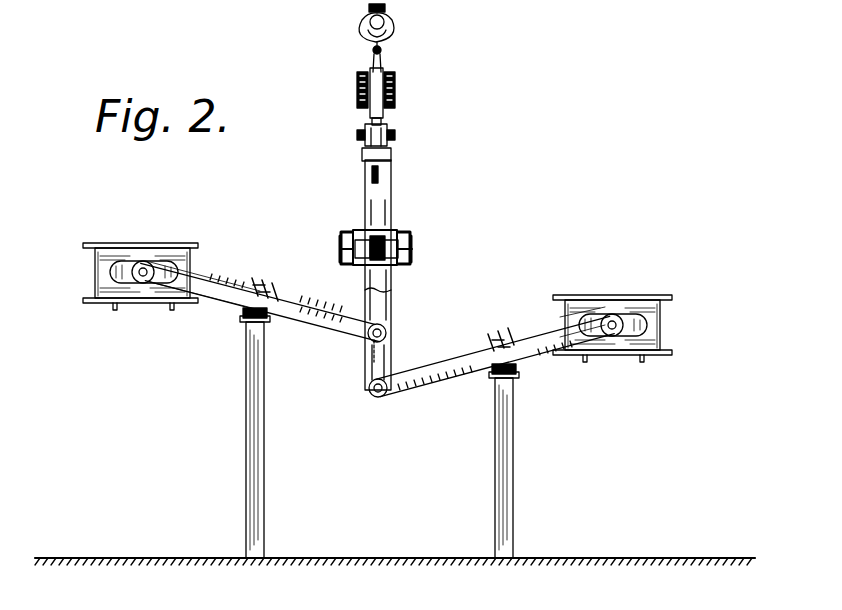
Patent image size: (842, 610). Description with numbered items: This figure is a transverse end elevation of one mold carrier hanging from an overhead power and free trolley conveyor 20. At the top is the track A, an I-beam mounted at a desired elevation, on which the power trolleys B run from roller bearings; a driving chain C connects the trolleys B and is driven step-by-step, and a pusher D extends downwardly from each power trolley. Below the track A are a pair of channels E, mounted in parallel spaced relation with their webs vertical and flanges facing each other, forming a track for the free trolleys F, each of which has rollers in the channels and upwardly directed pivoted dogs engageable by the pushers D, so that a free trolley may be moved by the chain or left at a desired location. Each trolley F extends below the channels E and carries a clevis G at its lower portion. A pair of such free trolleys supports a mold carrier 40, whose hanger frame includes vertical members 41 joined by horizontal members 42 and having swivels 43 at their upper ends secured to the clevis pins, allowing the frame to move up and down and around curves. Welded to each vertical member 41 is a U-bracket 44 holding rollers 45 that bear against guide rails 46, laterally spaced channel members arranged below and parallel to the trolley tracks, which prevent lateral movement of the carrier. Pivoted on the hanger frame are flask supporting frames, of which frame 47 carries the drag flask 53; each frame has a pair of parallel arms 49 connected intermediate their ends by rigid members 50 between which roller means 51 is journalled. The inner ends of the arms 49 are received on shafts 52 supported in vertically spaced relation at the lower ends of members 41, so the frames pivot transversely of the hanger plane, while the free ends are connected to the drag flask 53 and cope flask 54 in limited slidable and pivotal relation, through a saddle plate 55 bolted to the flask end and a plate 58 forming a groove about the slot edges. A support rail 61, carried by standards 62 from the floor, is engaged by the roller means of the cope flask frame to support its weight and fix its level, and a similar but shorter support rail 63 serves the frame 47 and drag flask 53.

The track A is at (386, 9).
The power trolleys B is at (392, 35).
The driving chain C is at (372, 52).
The pusher D is at (372, 66).
The channels E is at (356, 89).
The free trolleys F is at (383, 117).
The clevis G is at (396, 134).
The conveyor 20 is at (381, 75).
The mold carrier 40 is at (381, 267).
The vertical members 41 is at (367, 197).
The horizontal members 42 is at (372, 170).
The swivels 43 is at (392, 154).
The U-bracket 44 is at (384, 232).
The rollers 45 is at (352, 249).
The guide rails 46 is at (346, 234).
The flask supporting frame 47 is at (386, 298).
The arms 49 is at (225, 268).
The rigid members 50 is at (246, 310).
The roller means 51 is at (264, 282).
The shafts 52 is at (367, 338).
The drag flask 53 is at (634, 295).
The cope flask 54 is at (98, 305).
The saddle plate 55 is at (128, 268).
The plate 58 is at (118, 274).
The support rail 61 is at (266, 325).
The standards 62 is at (264, 444).
The support rail 63 is at (516, 376).